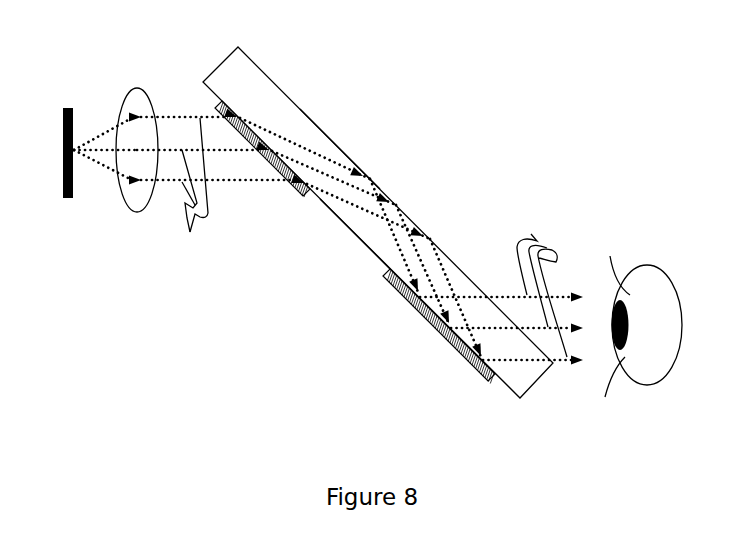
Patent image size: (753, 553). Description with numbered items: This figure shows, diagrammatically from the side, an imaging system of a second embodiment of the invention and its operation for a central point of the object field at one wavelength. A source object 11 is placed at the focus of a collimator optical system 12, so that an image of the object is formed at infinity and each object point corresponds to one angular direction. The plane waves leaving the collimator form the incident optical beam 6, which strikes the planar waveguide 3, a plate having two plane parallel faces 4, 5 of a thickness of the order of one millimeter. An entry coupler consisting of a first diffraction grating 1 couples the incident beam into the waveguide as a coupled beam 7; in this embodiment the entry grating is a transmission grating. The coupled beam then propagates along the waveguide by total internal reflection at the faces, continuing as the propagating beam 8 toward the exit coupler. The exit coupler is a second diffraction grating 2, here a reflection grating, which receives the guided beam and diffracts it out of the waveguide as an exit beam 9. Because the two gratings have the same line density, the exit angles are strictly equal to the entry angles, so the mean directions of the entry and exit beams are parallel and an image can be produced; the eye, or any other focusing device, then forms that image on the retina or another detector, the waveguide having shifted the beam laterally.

The first diffraction grating 1 is at (215, 104).
The second diffraction grating 2 is at (427, 322).
The planar waveguide 3 is at (226, 59).
The face of the waveguide 4 is at (357, 234).
The entry face of the waveguide 5 is at (323, 131).
The incident optical beam 6 is at (195, 187).
The coupled beam 7 is at (352, 202).
The propagating beam 8 is at (400, 255).
The exit beam 9 is at (501, 290).
The source object 11 is at (68, 200).
The collimator optical system 12 is at (138, 212).